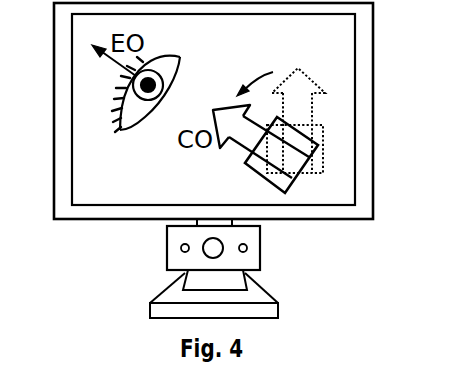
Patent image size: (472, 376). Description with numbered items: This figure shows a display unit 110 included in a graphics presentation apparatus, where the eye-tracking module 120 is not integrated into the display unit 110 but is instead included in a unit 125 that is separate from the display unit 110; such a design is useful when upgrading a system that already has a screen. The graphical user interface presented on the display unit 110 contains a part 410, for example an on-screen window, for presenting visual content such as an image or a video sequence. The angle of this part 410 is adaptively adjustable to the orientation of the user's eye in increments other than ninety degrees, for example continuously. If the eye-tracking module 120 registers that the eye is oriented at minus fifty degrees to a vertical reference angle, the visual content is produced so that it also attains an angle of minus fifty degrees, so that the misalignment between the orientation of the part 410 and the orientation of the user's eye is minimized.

The display unit 110 is at (201, 133).
The eye-tracking module 120 is at (181, 268).
The unit 125 is at (262, 262).
The part 410 is at (247, 168).